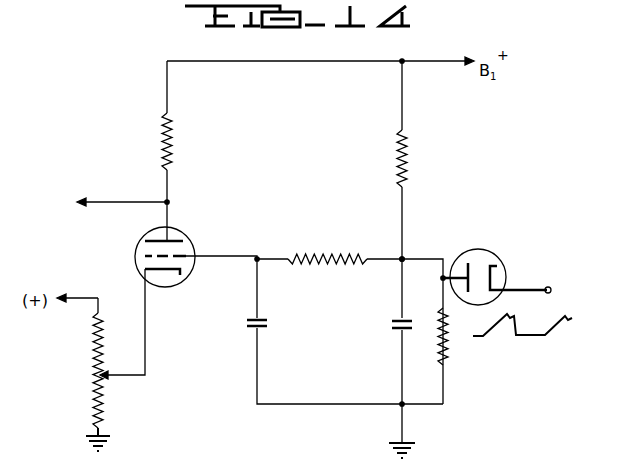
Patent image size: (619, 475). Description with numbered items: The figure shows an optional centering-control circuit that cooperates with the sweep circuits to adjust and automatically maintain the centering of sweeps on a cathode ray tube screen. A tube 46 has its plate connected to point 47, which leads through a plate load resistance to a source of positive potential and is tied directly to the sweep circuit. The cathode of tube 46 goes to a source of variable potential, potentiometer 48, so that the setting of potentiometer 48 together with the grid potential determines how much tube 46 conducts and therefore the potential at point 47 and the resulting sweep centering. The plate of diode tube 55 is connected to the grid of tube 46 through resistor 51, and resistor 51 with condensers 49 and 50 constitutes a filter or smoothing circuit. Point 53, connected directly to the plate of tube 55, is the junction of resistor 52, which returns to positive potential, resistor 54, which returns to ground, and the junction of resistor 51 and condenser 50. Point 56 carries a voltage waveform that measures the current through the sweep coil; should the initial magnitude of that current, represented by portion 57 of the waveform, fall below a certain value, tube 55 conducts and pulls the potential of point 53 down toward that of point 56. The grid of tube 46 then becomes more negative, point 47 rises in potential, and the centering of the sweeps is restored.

The tube 46 is at (135, 250).
The point 47 is at (176, 198).
The potentiometer 48 is at (90, 347).
The condenser 49 is at (263, 324).
The condenser 50 is at (393, 323).
The resistor 51 is at (328, 256).
The resistor 52 is at (410, 176).
The point 53 is at (405, 257).
The resistor 54 is at (448, 340).
The diode tube 55 is at (503, 271).
The point 56 is at (547, 316).
The portion of the voltage wave form 57 is at (558, 329).